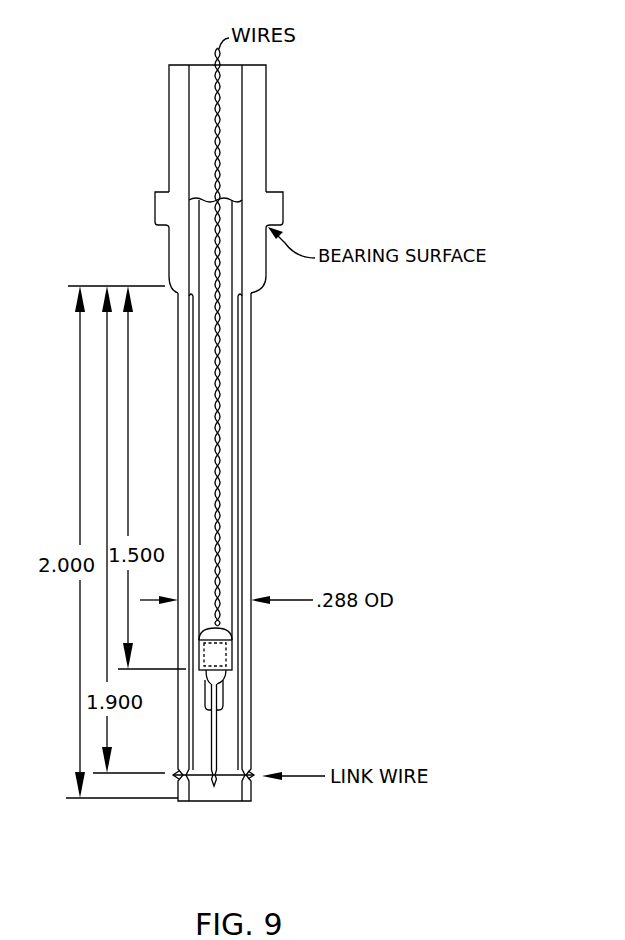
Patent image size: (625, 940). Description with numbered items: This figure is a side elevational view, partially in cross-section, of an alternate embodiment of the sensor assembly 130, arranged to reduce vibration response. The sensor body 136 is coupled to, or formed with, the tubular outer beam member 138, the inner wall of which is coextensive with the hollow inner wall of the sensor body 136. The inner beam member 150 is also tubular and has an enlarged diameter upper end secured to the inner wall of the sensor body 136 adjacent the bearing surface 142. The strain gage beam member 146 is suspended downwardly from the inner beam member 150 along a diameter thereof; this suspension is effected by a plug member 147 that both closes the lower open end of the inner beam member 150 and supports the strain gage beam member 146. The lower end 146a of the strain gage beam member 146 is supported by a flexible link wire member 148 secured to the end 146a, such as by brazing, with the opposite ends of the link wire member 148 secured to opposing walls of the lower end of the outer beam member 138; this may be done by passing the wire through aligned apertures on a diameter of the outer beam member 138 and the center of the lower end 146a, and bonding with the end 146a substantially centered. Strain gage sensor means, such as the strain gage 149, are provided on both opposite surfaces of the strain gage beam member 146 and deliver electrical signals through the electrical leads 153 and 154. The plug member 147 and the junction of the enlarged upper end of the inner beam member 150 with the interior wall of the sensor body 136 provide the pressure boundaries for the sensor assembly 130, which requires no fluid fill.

The sensor assembly 130 is at (297, 210).
The bearing surface 142 is at (155, 231).
The sensor body 136 is at (266, 272).
The outer beam member 138 is at (251, 452).
The inner beam member 150 is at (228, 418).
The electrical lead 153 is at (208, 545).
The electrical lead 154 is at (219, 531).
The plug member 147 is at (222, 632).
The strain gage 149 is at (223, 701).
The strain gage beam member 146 is at (217, 728).
The lower end of strain gage beam member 146a is at (214, 786).
The link wire member 148 is at (232, 773).